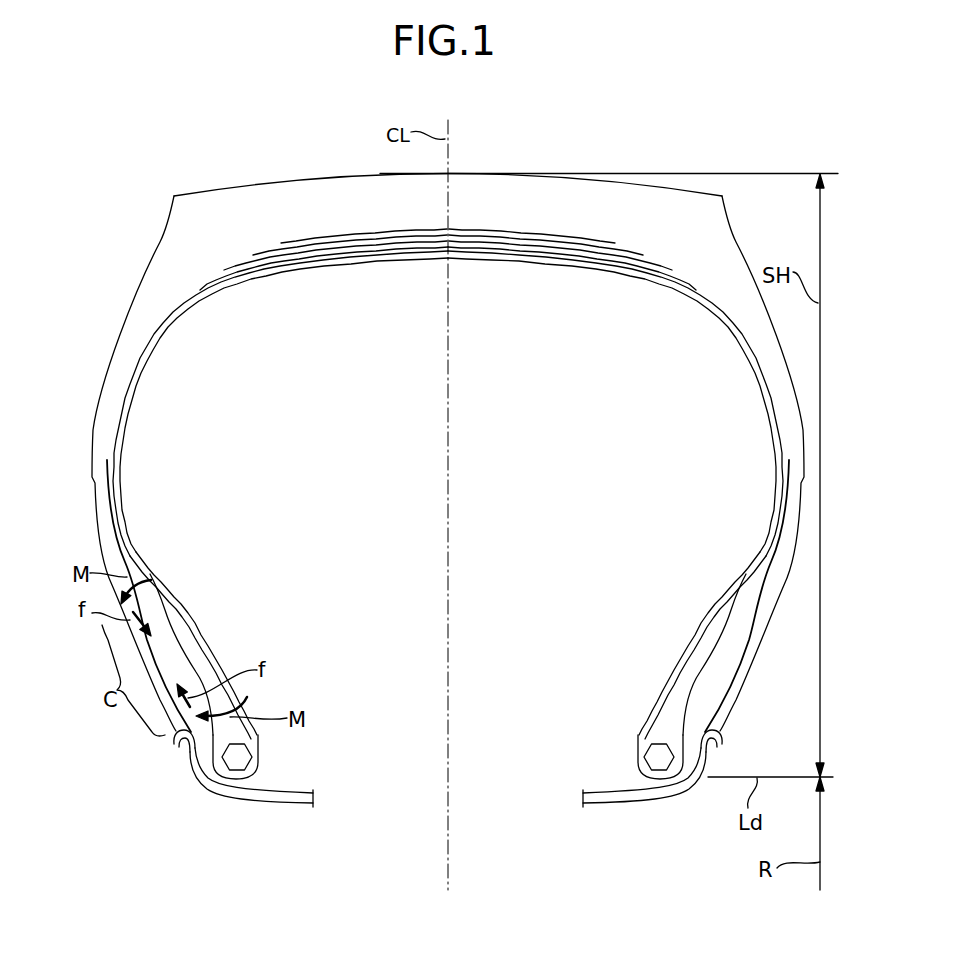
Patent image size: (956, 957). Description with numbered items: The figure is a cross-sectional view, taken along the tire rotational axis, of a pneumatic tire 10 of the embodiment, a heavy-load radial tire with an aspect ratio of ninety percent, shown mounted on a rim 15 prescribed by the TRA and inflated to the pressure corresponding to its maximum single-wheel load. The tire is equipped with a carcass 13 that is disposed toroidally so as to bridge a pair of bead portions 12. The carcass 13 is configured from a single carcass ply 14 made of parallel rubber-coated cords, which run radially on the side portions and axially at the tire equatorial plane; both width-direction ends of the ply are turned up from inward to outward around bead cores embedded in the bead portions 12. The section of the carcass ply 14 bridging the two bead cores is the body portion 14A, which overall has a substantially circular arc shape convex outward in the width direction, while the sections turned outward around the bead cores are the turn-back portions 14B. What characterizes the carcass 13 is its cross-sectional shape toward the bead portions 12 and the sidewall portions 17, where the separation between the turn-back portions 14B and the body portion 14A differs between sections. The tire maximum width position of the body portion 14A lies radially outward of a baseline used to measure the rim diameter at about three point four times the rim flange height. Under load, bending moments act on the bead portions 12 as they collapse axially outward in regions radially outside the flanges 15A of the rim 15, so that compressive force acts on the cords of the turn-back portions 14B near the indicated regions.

The pneumatic tire 10 is at (660, 163).
The bead portions 12 is at (725, 707).
The carcass 13 is at (147, 352).
The carcass ply 14 is at (242, 665).
The body portion 14A is at (207, 650).
The turn-back portions 14B is at (200, 672).
The rim 15 is at (420, 810).
The flanges 15A is at (178, 750).
The sidewall portions 17 is at (93, 430).